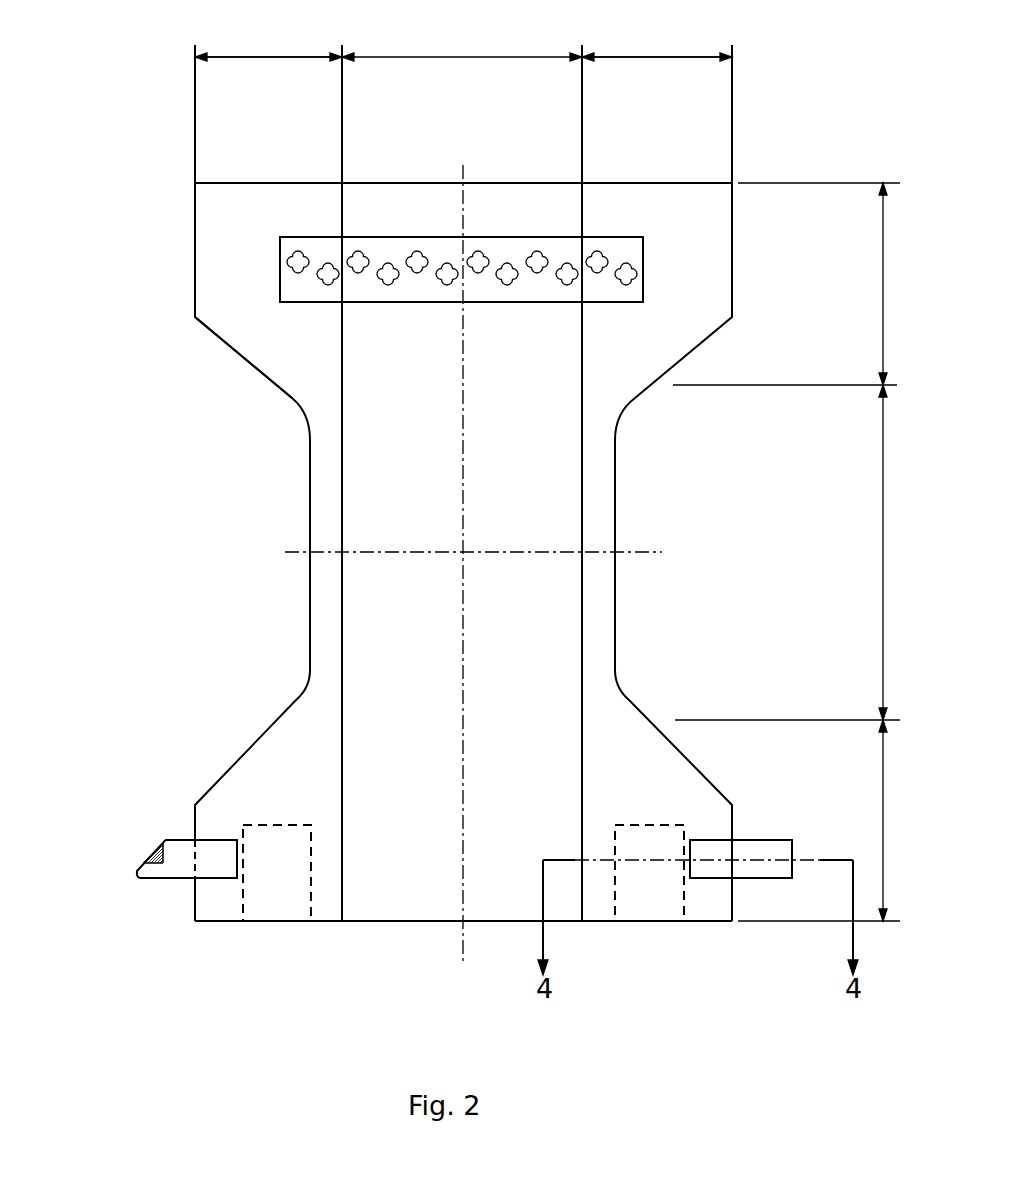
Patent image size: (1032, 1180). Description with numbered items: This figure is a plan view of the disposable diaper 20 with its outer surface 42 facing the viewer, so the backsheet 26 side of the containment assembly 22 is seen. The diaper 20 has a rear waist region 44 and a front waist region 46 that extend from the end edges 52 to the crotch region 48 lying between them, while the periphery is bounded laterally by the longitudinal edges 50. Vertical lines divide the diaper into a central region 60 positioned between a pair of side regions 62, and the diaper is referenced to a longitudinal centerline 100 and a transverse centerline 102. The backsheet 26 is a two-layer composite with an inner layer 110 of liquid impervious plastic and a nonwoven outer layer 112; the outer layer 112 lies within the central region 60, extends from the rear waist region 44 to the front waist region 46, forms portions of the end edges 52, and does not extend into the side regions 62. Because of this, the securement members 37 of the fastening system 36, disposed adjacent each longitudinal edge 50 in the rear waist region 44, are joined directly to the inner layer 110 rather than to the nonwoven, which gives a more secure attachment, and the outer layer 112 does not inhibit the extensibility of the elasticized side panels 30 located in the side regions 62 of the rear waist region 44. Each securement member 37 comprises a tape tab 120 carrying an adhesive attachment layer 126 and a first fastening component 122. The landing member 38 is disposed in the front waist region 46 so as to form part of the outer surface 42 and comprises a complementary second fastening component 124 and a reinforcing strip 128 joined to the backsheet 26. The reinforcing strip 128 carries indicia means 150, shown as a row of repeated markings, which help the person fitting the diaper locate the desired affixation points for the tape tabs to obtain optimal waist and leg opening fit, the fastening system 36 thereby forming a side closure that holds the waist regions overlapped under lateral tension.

The diaper 20 is at (397, 525).
The containment assembly 22 is at (411, 525).
The backsheet 26 is at (273, 358).
The elasticized side panels 30 is at (280, 898).
The fastening system 36 is at (437, 879).
The securement member 37 is at (152, 880).
The landing member 38 is at (576, 203).
The outer surface 42 is at (372, 495).
The rear waist region 44 is at (883, 822).
The front waist region 46 is at (883, 287).
The crotch region 48 is at (883, 553).
The longitudinal edges 50 is at (310, 645).
The end edges 52 is at (413, 183).
The central region 60 is at (467, 55).
The side regions 62 is at (268, 55).
The longitudinal centerline 100 is at (463, 948).
The transverse centerline 102 is at (650, 550).
The inner layer 110 is at (213, 296).
The outer layer 112 is at (373, 572).
The tape tab 120 is at (437, 879).
The first fastening component 122 is at (102, 823).
The second fastening component 124 is at (576, 203).
The adhesive attachment layer 126 is at (158, 852).
The reinforcing strip 128 is at (576, 203).
The indicia means 150 is at (479, 255).